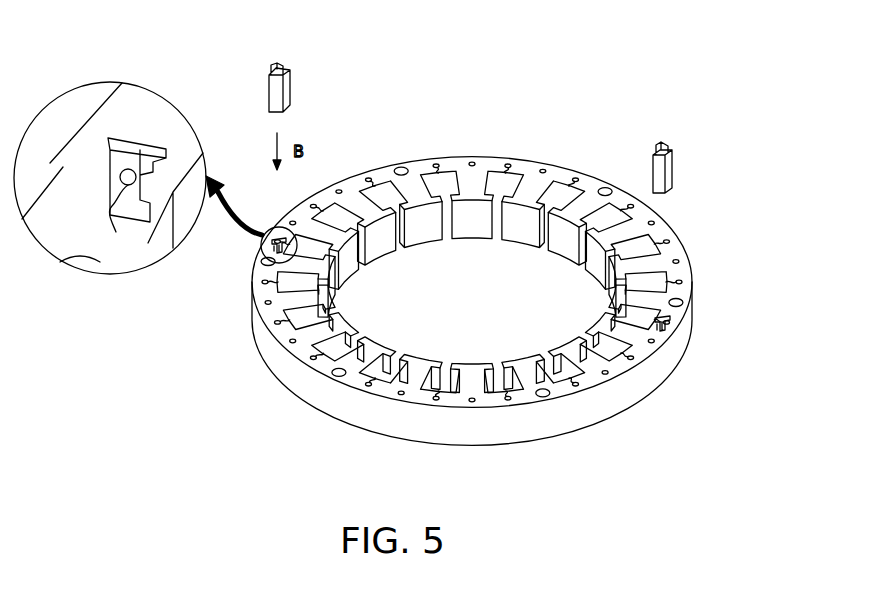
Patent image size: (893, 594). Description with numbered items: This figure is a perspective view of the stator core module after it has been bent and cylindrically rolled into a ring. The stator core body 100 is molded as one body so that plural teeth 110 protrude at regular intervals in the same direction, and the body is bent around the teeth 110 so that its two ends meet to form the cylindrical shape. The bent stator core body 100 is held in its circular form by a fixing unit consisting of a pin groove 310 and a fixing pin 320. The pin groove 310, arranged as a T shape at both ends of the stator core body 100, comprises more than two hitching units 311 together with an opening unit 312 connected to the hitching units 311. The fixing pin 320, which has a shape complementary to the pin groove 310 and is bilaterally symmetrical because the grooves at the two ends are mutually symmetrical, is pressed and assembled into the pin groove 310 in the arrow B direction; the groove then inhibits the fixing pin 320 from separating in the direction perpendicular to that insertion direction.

The stator core body 100 is at (472, 274).
The teeth 110 is at (470, 193).
The pin groove 310 is at (664, 318).
The hitching unit 311 is at (116, 232).
The opening unit 312 is at (134, 173).
The fixing pin 320 is at (672, 158).